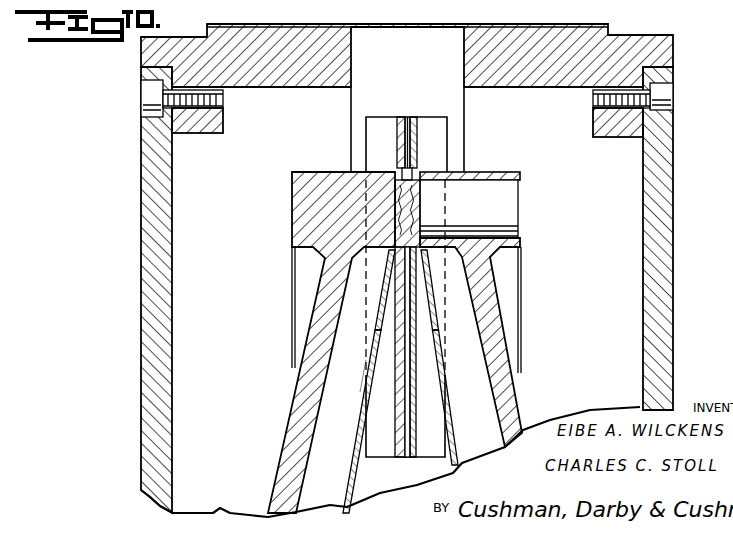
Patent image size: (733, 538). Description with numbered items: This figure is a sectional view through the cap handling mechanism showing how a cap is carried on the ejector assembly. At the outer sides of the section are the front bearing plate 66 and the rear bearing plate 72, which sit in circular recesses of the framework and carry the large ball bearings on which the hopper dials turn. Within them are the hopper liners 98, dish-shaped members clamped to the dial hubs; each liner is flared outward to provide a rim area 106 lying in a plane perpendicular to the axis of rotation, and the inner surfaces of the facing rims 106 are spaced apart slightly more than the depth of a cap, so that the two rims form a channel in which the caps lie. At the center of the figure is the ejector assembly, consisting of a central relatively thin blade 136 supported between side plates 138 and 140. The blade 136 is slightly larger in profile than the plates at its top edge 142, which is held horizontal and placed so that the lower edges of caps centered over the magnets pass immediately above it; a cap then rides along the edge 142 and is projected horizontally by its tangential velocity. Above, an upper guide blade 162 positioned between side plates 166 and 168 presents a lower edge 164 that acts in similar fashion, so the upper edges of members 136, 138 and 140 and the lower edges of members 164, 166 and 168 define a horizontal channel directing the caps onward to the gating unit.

The front bearing plate 66 is at (141, 210).
The rear bearing plate 72 is at (673, 222).
The side plate 168 is at (403, 117).
The side plate 166 is at (414, 117).
The upper guide blade 162 is at (414, 137).
The lower edge 164 is at (420, 178).
The top edge 142 is at (419, 230).
The rim area 106 is at (390, 277).
The hopper liner 98 is at (362, 410).
The side plate 140 is at (370, 389).
The blade 136 is at (374, 390).
The side plate 138 is at (418, 403).